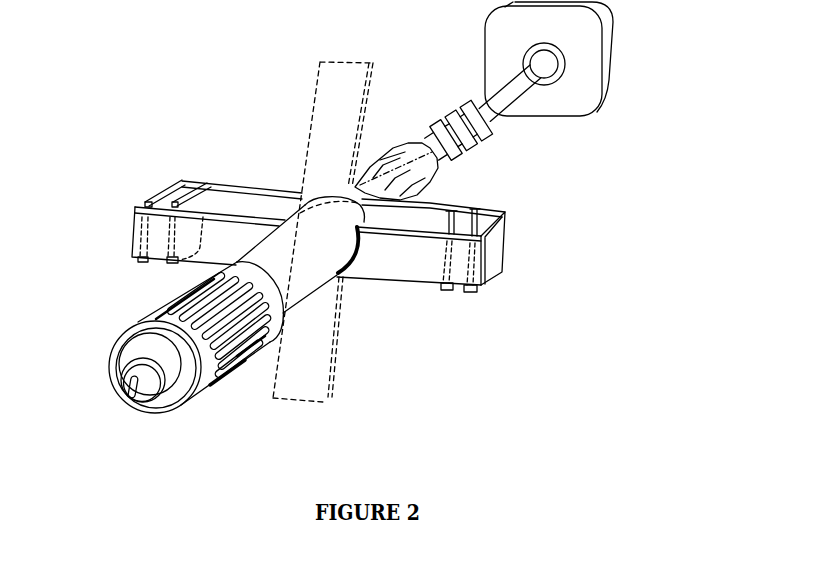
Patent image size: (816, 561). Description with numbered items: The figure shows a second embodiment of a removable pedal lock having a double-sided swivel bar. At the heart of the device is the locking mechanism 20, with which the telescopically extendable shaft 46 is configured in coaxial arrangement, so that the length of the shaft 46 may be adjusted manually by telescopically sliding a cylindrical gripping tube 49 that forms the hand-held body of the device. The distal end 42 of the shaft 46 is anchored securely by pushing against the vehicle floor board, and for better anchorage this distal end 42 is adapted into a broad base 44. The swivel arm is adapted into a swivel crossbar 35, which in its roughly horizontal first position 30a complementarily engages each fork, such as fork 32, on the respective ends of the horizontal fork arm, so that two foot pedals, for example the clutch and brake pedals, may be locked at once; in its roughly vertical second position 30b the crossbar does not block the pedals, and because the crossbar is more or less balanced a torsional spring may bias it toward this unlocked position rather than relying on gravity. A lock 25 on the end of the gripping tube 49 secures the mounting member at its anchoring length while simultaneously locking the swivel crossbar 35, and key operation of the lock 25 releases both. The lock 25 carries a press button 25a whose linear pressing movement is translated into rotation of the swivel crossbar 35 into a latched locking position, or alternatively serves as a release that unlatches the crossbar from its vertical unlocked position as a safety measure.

The locking mechanism 20 is at (305, 267).
The lock 25 is at (129, 386).
The press button 25a is at (146, 395).
The first position 30a is at (133, 242).
The second position 30b is at (328, 370).
The fork 32 is at (507, 229).
The swivel crossbar 35 is at (415, 268).
The distal end 42 is at (538, 74).
The broad base 44 is at (607, 62).
The telescopically extending shaft 46 is at (483, 105).
The cylindrical gripping tube 49 is at (180, 408).